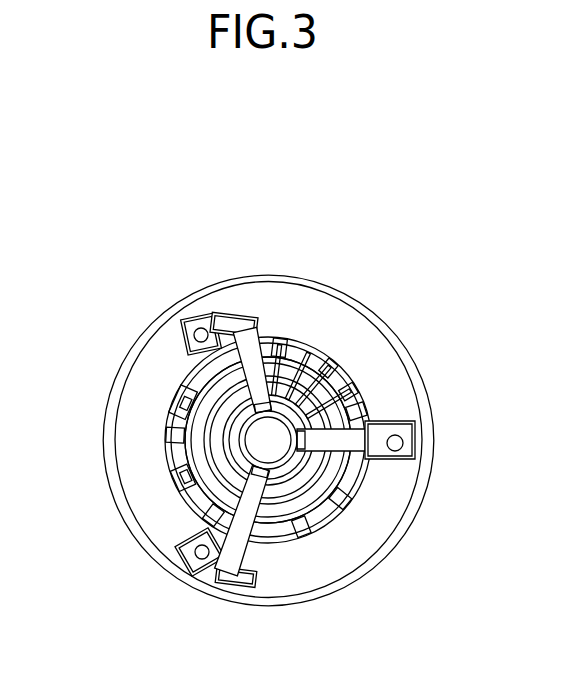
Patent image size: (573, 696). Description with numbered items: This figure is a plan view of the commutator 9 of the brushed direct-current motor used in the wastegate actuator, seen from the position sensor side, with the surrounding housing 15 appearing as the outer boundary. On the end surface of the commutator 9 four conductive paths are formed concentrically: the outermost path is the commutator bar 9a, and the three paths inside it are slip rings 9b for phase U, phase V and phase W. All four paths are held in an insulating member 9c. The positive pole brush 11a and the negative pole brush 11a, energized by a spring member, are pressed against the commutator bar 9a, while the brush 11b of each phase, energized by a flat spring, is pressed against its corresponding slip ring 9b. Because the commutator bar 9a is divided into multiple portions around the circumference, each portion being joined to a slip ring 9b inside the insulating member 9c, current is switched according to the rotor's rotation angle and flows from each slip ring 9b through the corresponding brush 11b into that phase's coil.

The housing 15 is at (138, 352).
The commutator 9 is at (321, 541).
The commutator bar 9a is at (343, 396).
The slip ring 9b is at (284, 397).
The insulating member 9c is at (342, 508).
The positive pole brush and negative pole brush 11a is at (174, 405).
The brush 11b is at (262, 392).